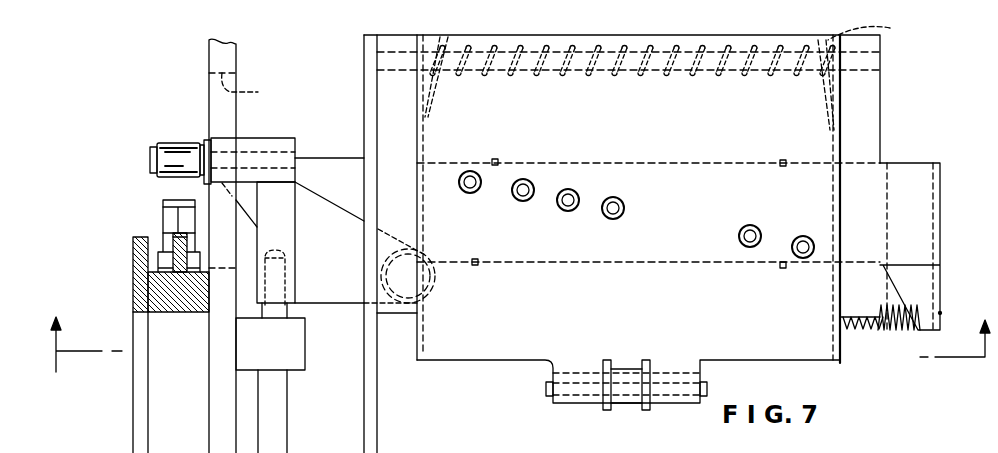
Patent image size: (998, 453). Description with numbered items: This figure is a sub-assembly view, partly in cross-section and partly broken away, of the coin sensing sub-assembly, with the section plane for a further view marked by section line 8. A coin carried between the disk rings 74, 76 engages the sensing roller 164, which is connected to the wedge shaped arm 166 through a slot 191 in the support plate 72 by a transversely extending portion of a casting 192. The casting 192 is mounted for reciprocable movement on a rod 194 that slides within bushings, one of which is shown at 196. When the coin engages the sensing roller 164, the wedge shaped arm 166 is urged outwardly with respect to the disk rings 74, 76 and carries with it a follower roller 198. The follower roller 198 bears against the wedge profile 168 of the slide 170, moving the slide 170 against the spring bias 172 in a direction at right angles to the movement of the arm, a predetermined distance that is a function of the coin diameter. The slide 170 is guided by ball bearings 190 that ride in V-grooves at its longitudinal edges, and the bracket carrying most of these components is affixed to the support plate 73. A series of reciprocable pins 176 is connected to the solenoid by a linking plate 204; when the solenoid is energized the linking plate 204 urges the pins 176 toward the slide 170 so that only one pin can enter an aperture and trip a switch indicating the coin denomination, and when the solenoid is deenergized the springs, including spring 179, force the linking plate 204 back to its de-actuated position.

The section line 8- 8 is at (518, 359).
The support plate 72 is at (225, 62).
The support plate 73 is at (380, 411).
The disk ring 74 is at (170, 223).
The disk ring 76 is at (184, 212).
The sensing roller 164 is at (178, 148).
The wedge shaped arm 166 is at (348, 290).
The wedge profile 168 is at (343, 205).
The slide 170 is at (395, 170).
The spring bias 172 is at (895, 330).
The reciprocable pins 176 is at (523, 186).
The spring 179 is at (876, 33).
The ball bearings 190 is at (496, 157).
The slot 191 is at (256, 87).
The casting 192 is at (258, 146).
The rod 194 is at (277, 418).
The bushing 196 is at (245, 357).
The follower roller 198 is at (400, 298).
The linking plate 204 is at (668, 152).